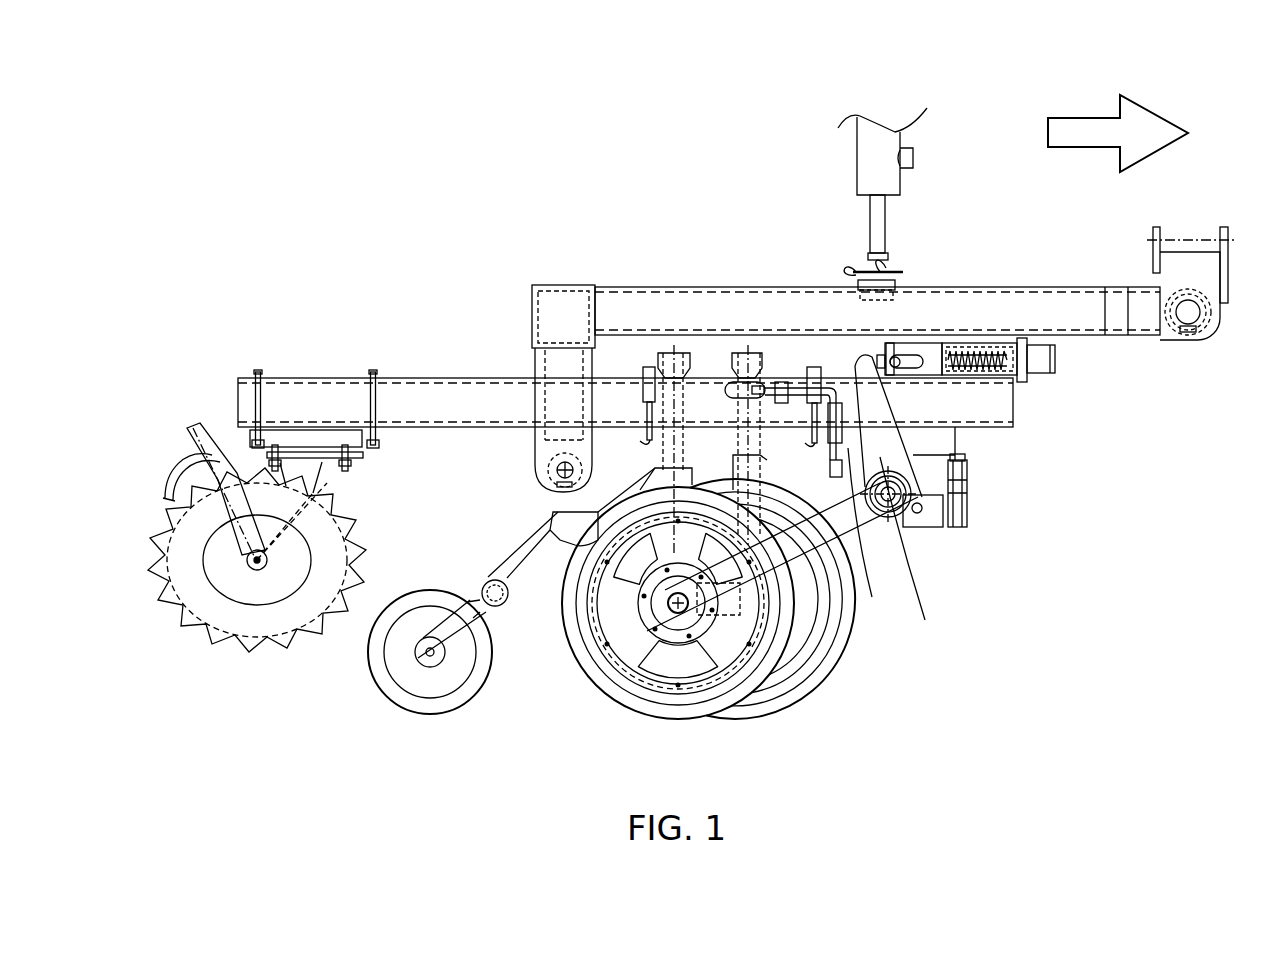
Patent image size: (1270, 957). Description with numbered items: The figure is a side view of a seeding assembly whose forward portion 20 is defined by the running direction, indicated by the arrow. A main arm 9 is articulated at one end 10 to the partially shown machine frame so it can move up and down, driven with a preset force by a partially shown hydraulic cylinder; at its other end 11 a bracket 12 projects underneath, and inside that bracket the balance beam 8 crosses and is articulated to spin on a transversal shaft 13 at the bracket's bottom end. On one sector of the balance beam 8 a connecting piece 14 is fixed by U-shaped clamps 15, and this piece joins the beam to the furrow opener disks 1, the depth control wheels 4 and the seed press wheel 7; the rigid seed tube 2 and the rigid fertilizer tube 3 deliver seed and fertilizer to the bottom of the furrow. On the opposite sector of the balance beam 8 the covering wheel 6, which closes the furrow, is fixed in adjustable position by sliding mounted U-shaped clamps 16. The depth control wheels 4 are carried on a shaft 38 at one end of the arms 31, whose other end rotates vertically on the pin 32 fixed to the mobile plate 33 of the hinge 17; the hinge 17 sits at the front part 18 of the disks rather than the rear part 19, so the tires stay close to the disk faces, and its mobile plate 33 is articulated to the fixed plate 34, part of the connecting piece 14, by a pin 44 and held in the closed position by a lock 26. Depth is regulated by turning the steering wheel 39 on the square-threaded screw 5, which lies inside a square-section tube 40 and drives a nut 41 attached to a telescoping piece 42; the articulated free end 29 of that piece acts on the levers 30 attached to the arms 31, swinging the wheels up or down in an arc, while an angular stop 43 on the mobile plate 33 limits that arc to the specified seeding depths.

The furrow opener disks 1 is at (792, 684).
The rigid tube 2 is at (666, 448).
The rigid tube 3 is at (739, 438).
The depth control wheels 4 is at (736, 647).
The square-threaded screw 5 is at (994, 361).
The covering wheel 6 is at (228, 625).
The seed press wheel 7 is at (393, 688).
The balance beam 8 is at (464, 409).
The main arm 9 is at (680, 300).
The end 10 is at (1208, 333).
The other end 11 is at (525, 318).
The bracket 12 is at (530, 373).
The transversal shaft 13 is at (556, 470).
The connecting piece 14 is at (818, 548).
The U-shaped clamps 15 is at (806, 413).
The sliding mounted U-shaped clamps 16 is at (368, 372).
The hinge 17 is at (979, 490).
The front part 18 is at (899, 599).
The rear part 19 is at (538, 614).
The front part/forward portion 20 is at (1184, 118).
The lock 26 is at (900, 593).
The free end 29 is at (944, 342).
The levers 30 is at (850, 362).
The arms 31 is at (825, 685).
The shaft/pin 32 is at (897, 511).
The mobile plate 33 is at (934, 529).
The fixed plate 34 is at (945, 452).
The shaft 38 is at (666, 616).
The steering wheel 39 is at (1052, 380).
The square-section tube 40 is at (1013, 344).
The nut 41 is at (984, 344).
The piece 42 is at (909, 341).
The angular stop 43 is at (938, 506).
The pin 44 is at (968, 533).